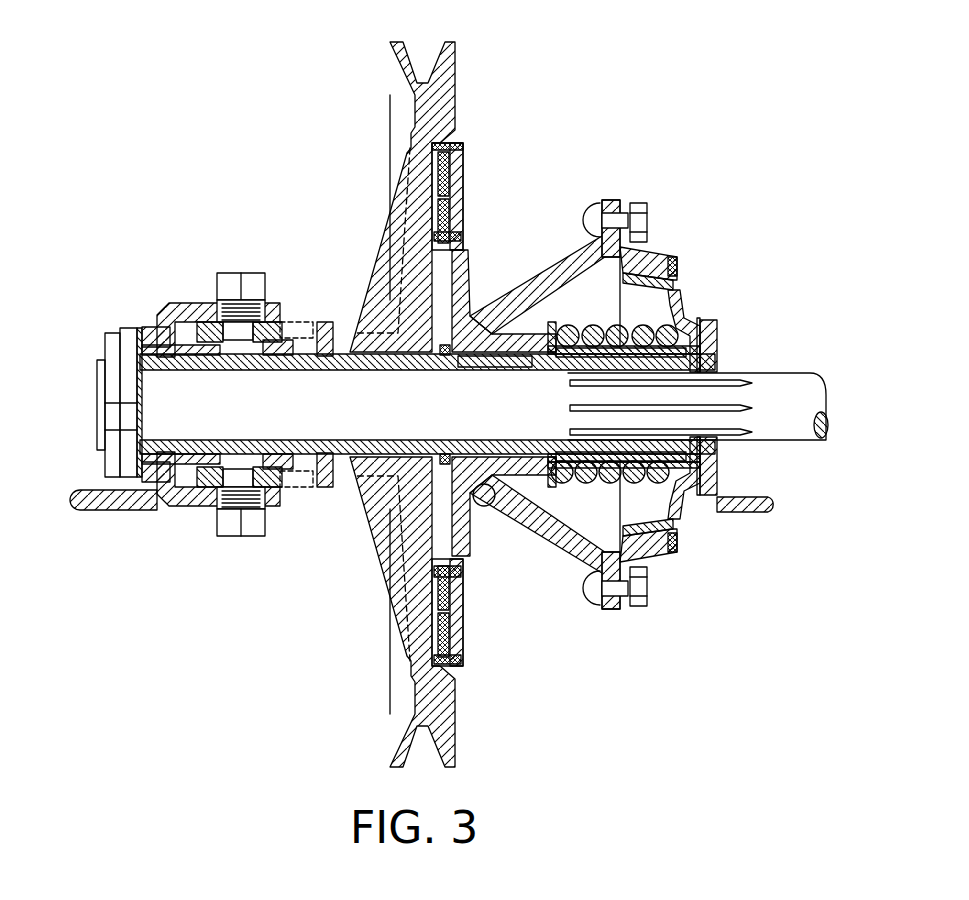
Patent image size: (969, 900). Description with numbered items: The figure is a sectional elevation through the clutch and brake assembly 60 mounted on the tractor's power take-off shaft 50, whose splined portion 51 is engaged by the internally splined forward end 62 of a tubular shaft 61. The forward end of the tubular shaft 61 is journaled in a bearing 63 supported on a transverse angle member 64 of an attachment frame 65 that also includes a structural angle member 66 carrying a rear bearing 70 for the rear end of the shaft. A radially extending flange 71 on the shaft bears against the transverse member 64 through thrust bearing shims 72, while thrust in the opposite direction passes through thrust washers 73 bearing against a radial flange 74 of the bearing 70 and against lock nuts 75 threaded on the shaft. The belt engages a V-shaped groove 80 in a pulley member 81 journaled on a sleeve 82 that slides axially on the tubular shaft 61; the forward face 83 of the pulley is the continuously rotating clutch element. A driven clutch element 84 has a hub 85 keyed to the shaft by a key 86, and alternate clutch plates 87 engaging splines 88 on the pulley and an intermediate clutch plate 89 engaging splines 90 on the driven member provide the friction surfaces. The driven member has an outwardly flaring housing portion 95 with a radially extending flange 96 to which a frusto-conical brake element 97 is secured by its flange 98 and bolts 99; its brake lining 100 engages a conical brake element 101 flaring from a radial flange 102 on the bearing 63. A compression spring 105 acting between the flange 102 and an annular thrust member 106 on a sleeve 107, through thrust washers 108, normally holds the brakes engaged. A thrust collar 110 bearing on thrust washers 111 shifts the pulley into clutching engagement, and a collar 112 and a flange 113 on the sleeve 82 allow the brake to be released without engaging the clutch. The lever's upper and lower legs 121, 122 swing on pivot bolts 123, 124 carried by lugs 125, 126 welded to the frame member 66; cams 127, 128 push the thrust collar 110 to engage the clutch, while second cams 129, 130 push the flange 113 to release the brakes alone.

The power take-off shaft 50 is at (766, 378).
The splined portion 51 is at (570, 407).
The assembly 60 is at (540, 628).
The tubular shaft 61 is at (468, 443).
The splined forward end 62 is at (572, 372).
The bearing 63 is at (630, 327).
The transverse angle member 64 is at (726, 502).
The attachment frame 65 is at (122, 508).
The structural angle member 66 is at (82, 508).
The bearing 70 is at (187, 455).
The radially extending flange 71 is at (718, 345).
The thrust bearing shims 72 is at (704, 320).
The thrust washers 73 is at (132, 332).
The radial flange 74 is at (152, 332).
The lock nuts 75 is at (113, 333).
The V-shaped groove 80 is at (405, 62).
The pulley member 81 is at (415, 103).
The sleeve 82 is at (357, 480).
The forward face 83 is at (440, 200).
The driven clutch element 84 is at (463, 278).
The hub 85 is at (493, 342).
The key 86 is at (462, 361).
The axially slidable plates 87 is at (444, 175).
The splines 88 is at (455, 143).
The intermediate clutch plate 89 is at (436, 233).
The axially extending splines 90 is at (455, 571).
The outwardly flaring housing portion 95 is at (562, 287).
The radially extending flange 96 is at (606, 203).
The brake element 97 is at (650, 255).
The flange 98 is at (622, 203).
The bolts 99 is at (592, 220).
The brake lining 100 is at (676, 264).
The conical brake element 101 is at (675, 282).
The radial flange 102 is at (686, 302).
The compression spring 105 is at (580, 484).
The annular thrust member 106 is at (560, 500).
The sleeve 107 is at (575, 442).
The thrust washers 108 is at (528, 472).
The thrust collar 110 is at (323, 488).
The thrust washers 111 is at (326, 330).
The collar 112 is at (440, 455).
The radially outwardly extending flange 113 is at (297, 360).
The upper leg 121 is at (268, 334).
The lower leg 122 is at (266, 488).
The pivot bolt 123 is at (241, 282).
The pivot bolt 124 is at (231, 520).
The lug 125 is at (192, 306).
The lug 126 is at (190, 502).
The cam 127 is at (298, 322).
The cam 128 is at (300, 488).
The cam 129 is at (258, 357).
The cam 130 is at (256, 454).